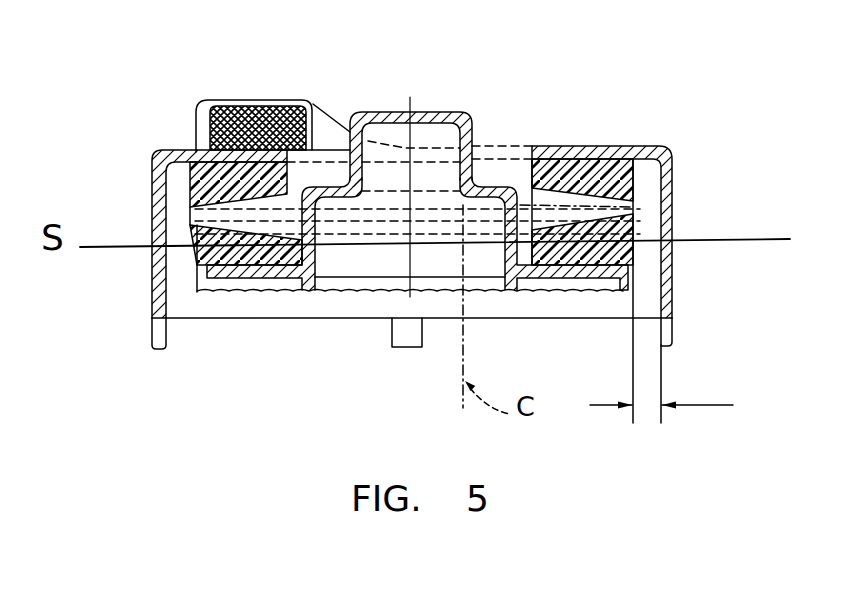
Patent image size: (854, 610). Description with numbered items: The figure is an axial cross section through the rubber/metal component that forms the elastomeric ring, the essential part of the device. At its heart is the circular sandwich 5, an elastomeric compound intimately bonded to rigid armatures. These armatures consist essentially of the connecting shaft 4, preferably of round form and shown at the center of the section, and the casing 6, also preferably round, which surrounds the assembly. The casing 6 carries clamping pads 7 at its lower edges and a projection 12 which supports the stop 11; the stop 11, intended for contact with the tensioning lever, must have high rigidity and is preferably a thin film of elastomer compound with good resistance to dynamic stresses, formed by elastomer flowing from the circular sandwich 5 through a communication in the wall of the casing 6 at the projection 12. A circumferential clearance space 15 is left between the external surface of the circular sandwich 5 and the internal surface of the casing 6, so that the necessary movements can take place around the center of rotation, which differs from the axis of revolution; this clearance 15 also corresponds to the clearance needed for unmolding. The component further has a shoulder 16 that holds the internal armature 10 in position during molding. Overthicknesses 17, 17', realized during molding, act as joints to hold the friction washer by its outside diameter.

The connecting shaft 4 is at (440, 112).
The circular sandwich 5 is at (640, 228).
The casing 6 is at (673, 263).
The clamping pads 7 is at (153, 338).
The internal armature 10 is at (558, 195).
The stop 11 is at (200, 113).
The projection 12 is at (269, 90).
The circumferential clearance space 15 is at (661, 291).
The shoulder 16 is at (190, 230).
The flange of inner cup 17 is at (412, 275).
The overthicknesses 17' is at (273, 287).